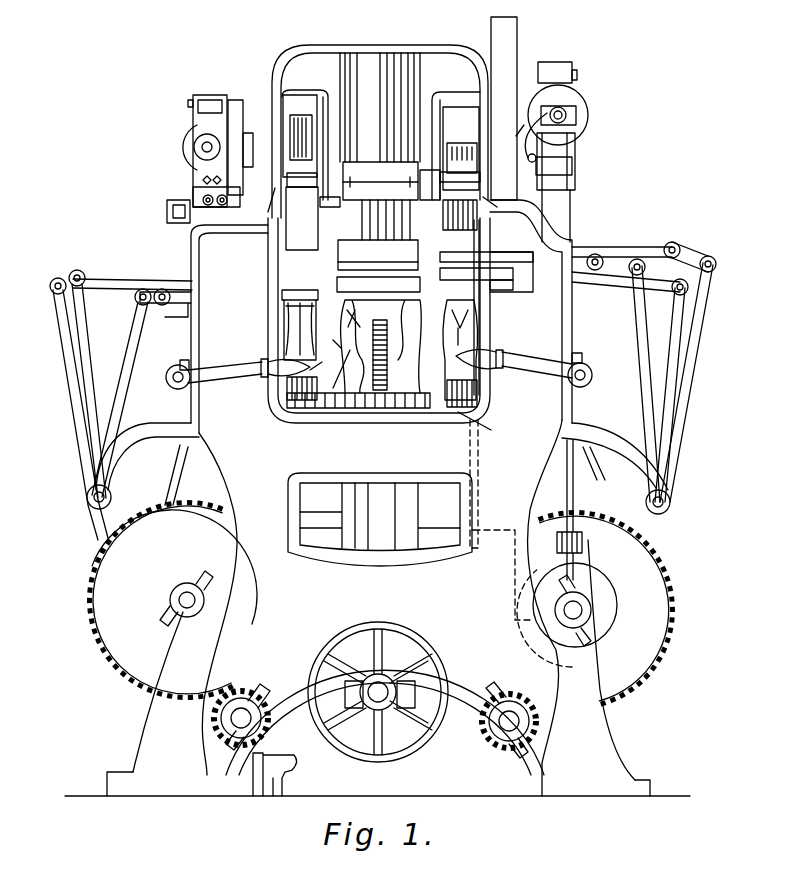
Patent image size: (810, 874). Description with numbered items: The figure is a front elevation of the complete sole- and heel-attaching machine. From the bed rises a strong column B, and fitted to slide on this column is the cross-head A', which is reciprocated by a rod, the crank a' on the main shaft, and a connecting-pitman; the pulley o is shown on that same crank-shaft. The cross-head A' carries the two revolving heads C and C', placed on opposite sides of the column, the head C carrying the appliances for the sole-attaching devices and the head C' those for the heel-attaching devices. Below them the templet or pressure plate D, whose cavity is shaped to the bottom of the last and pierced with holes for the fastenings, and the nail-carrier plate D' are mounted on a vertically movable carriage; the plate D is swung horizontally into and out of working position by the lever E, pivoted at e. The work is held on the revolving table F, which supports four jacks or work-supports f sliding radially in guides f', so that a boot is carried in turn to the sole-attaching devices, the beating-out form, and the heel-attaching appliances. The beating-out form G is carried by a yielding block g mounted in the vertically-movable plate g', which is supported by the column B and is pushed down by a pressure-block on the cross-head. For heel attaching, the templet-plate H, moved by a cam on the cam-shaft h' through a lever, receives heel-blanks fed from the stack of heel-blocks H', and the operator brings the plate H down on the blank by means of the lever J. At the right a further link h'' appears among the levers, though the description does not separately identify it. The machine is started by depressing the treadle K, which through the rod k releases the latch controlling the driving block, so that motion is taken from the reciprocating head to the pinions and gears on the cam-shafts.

The cross-head A' is at (380, 107).
The crank a' is at (417, 664).
The column B is at (386, 220).
The revolving head C is at (300, 172).
The revolving head C' is at (460, 168).
The templet or pressure plate D is at (300, 315).
The nail-carrier plate D' is at (121, 276).
The lever E is at (132, 373).
The pivot e is at (88, 501).
The revolving table F is at (480, 426).
The jacks or work-supports f is at (394, 353).
The guides f' is at (388, 426).
The beating-out form G is at (378, 287).
The block g is at (389, 332).
The vertically-movable plate or support g' is at (378, 253).
The templet-plate H is at (483, 264).
The stack of heel-blocks H' is at (504, 108).
The cam-shaft h' is at (580, 553).
The arm h'' is at (698, 382).
The lever J is at (524, 371).
The treadle K is at (275, 766).
The rod k is at (252, 758).
The pulley o is at (436, 732).